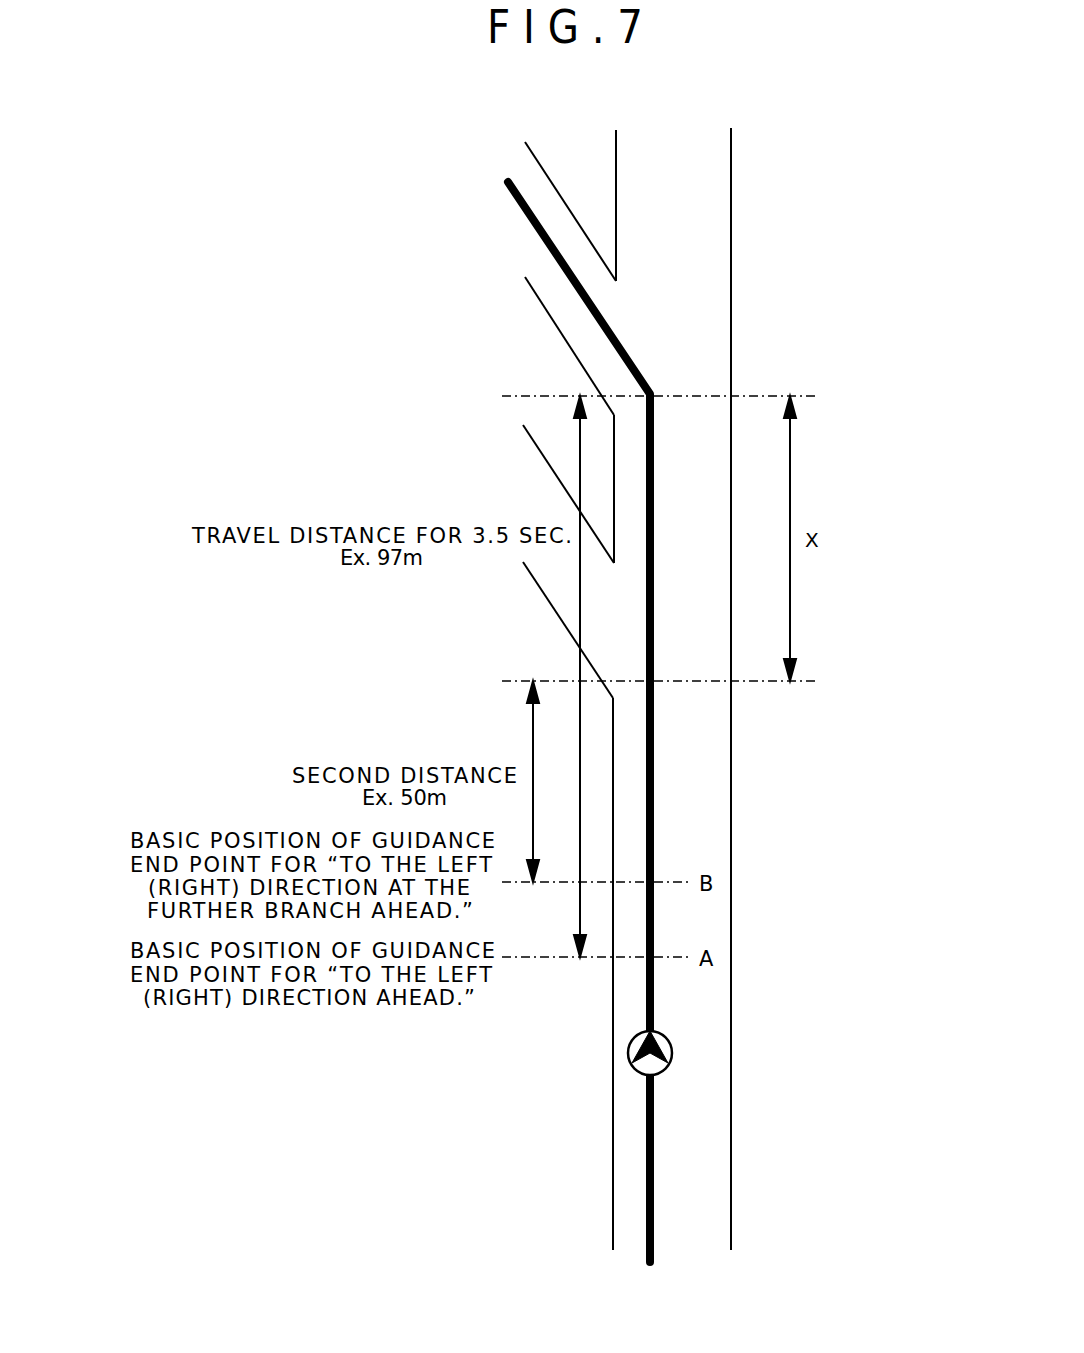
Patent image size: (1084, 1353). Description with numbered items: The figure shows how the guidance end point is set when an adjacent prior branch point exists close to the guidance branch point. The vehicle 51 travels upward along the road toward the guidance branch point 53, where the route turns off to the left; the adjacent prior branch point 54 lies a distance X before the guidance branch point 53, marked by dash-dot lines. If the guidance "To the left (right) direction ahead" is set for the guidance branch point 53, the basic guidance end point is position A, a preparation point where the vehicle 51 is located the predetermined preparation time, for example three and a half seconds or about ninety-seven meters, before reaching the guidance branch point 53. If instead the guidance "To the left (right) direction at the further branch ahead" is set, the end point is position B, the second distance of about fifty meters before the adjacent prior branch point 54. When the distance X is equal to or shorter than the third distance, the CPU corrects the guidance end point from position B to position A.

The vehicle 51 is at (665, 1046).
The guidance branch point 53 is at (689, 348).
The adjacent prior branch point 54 is at (693, 639).